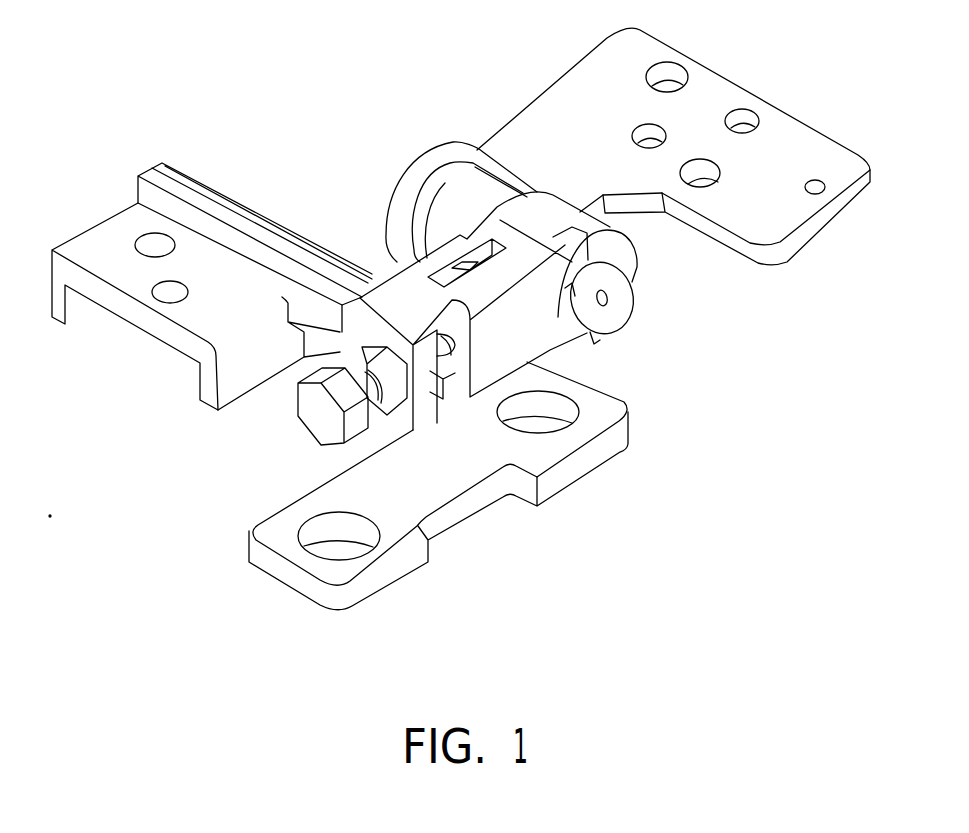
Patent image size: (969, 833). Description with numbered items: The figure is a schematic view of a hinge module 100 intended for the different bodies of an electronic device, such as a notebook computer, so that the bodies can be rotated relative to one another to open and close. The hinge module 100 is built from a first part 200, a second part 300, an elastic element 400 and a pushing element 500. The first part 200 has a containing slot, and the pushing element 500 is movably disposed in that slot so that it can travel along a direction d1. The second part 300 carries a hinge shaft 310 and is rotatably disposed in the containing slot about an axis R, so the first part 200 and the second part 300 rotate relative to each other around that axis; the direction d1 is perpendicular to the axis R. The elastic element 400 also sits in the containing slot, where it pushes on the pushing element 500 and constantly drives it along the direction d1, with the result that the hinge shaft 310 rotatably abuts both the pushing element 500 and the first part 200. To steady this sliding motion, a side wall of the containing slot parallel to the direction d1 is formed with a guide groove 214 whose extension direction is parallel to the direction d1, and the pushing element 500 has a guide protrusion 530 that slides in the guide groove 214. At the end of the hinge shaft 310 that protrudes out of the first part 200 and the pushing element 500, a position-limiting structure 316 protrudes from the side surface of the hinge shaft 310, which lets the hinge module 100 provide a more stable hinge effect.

The hinge module 100 is at (778, 657).
The first part 200 is at (465, 507).
The guide groove 214 is at (427, 276).
The second part 300 is at (788, 222).
The hinge shaft 310 is at (610, 303).
The position-limiting structure 316 is at (627, 280).
The elastic element 400 is at (457, 343).
The pushing element 500 is at (527, 338).
The guide protrusion 530 is at (460, 268).